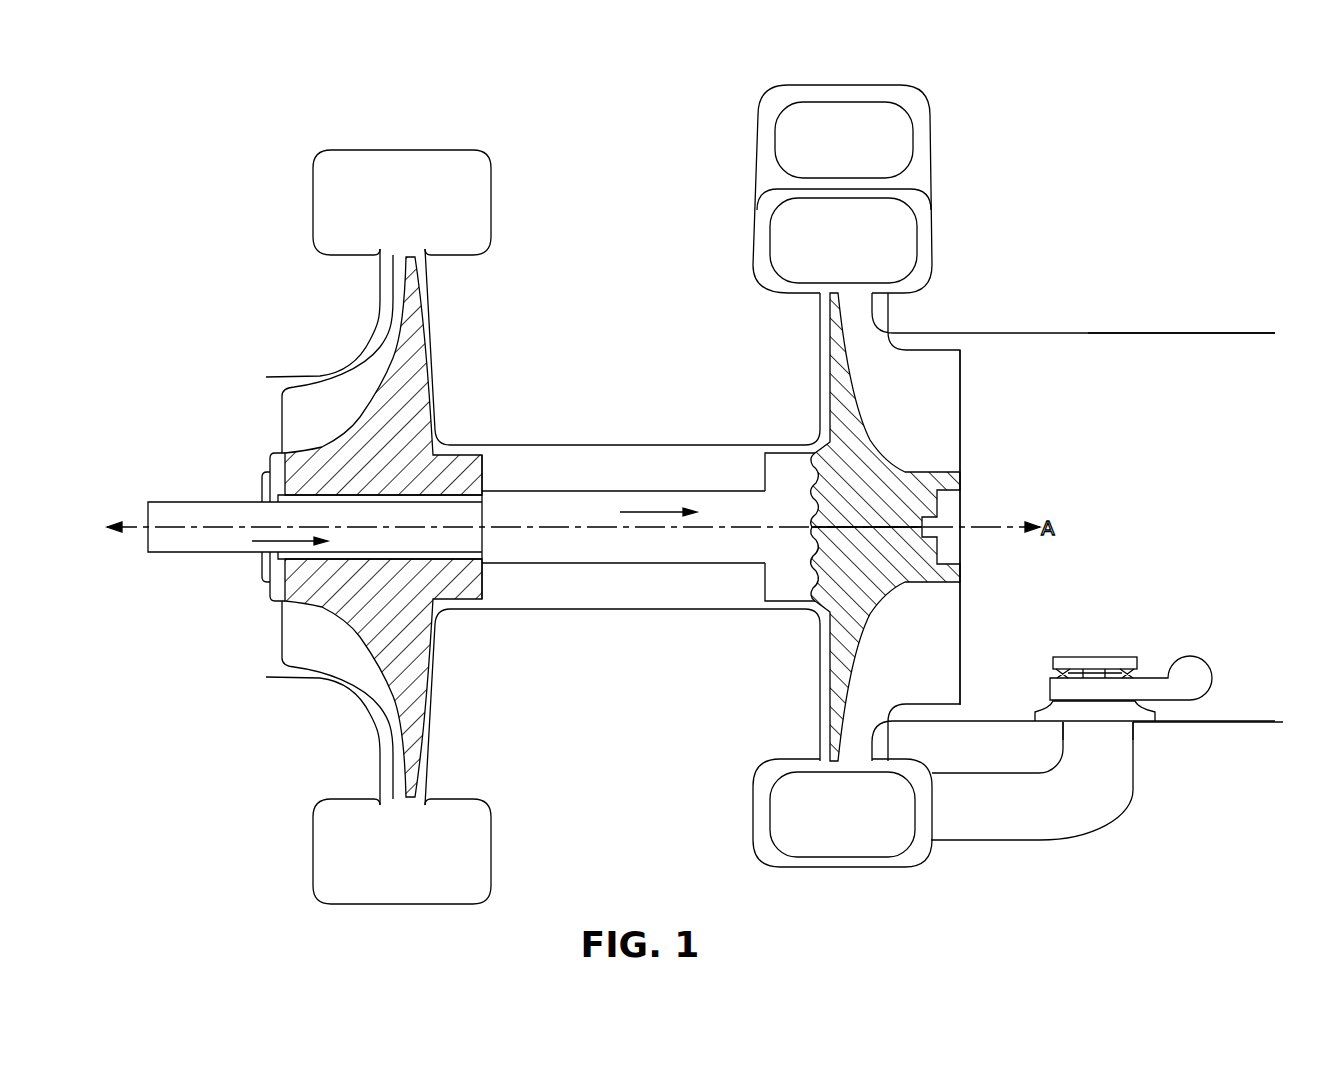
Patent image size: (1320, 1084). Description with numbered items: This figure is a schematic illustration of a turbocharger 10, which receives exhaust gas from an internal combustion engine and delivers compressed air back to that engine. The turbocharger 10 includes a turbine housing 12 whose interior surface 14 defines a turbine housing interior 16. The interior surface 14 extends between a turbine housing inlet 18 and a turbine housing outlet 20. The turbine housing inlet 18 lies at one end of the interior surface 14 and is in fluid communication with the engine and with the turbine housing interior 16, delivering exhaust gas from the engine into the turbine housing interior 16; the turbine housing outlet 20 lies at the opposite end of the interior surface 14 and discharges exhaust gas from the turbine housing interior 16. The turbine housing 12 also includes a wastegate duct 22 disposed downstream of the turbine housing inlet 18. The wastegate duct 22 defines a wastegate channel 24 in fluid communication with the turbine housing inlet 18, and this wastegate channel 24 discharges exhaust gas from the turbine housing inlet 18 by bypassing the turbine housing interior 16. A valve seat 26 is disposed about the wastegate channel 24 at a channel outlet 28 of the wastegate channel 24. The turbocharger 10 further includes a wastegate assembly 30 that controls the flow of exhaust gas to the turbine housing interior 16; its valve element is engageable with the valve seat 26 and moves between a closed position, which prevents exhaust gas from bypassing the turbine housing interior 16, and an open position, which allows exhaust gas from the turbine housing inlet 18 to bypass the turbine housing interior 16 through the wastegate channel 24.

The turbocharger 10 is at (237, 143).
The turbine housing 12 is at (928, 180).
The interior surface 14 is at (1088, 333).
The turbine housing interior 16 is at (978, 347).
The turbine housing inlet 18 is at (883, 132).
The turbine housing outlet 20 is at (1224, 525).
The wastegate duct 22 is at (1035, 842).
The wastegate channel 24 is at (1075, 798).
The valve seat 26 is at (1143, 725).
The channel outlet 28 is at (1092, 727).
The wastegate assembly 30 is at (1162, 640).